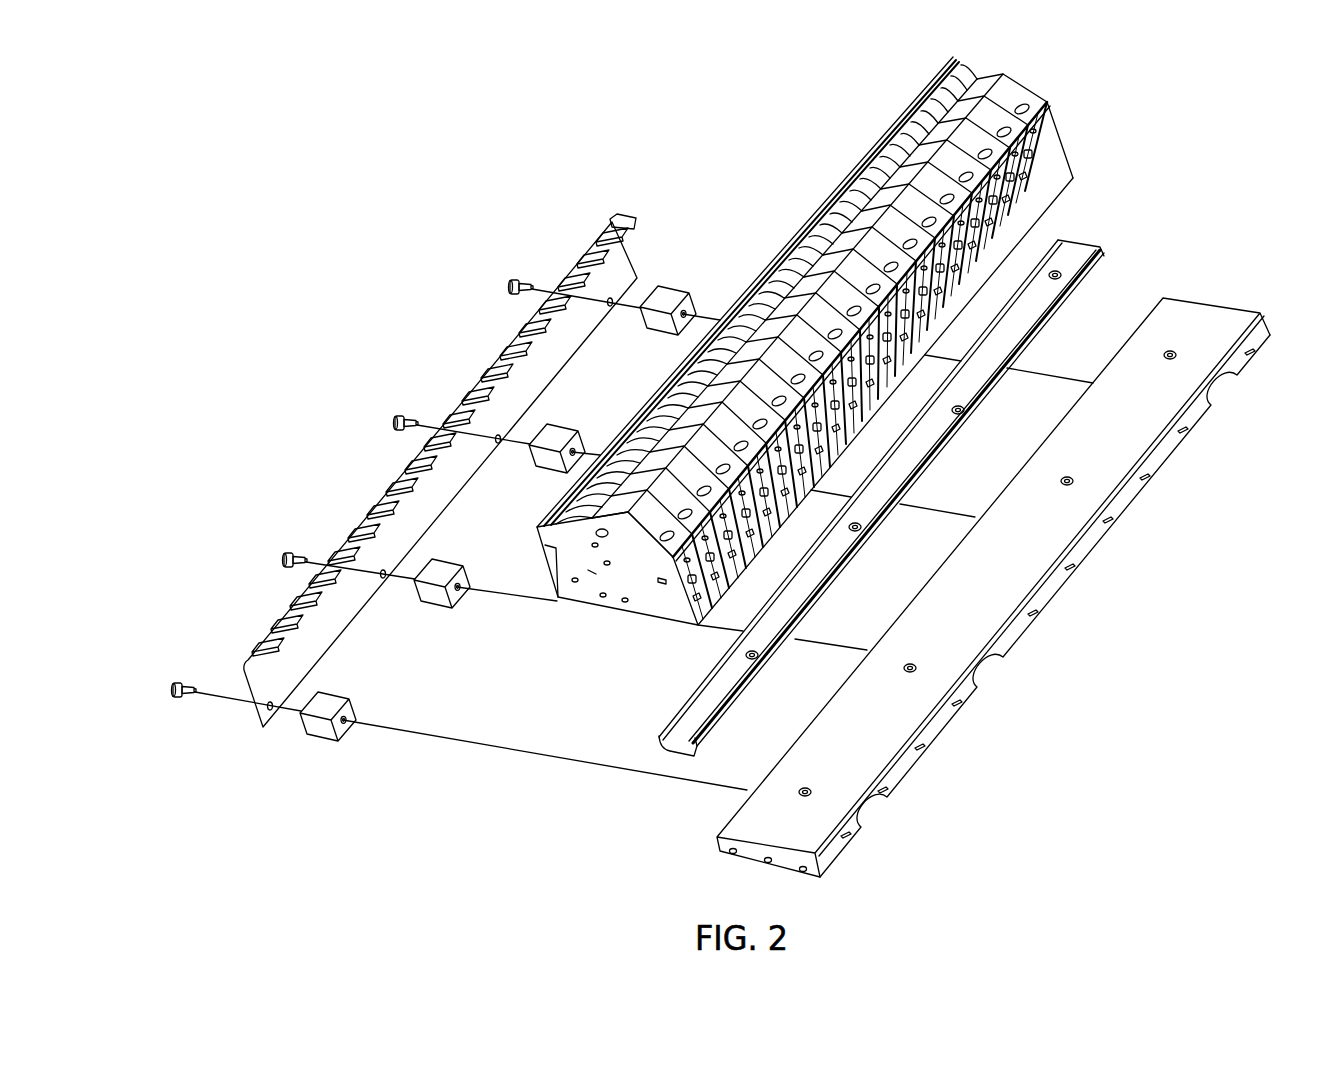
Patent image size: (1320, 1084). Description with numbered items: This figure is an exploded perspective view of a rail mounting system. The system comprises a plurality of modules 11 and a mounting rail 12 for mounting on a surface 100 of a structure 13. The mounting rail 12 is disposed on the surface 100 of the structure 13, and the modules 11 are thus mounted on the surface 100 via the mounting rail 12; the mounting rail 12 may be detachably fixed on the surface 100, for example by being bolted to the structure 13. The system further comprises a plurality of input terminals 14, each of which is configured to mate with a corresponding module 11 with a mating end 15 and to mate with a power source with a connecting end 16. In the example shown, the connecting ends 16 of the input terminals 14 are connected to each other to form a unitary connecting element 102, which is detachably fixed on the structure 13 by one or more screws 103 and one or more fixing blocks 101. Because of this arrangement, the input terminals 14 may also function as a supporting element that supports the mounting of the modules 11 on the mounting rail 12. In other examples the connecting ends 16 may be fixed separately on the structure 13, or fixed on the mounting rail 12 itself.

The modules 11 is at (983, 83).
The mounting rail 12 is at (1068, 257).
The structure 13 is at (902, 760).
The input terminals 14 is at (413, 470).
The mating end 15 is at (312, 660).
The connecting end 16 is at (328, 662).
The surface 100 is at (993, 587).
The fixing blocks 101 is at (320, 722).
The unitary connecting element 102 is at (258, 681).
The screws 103 is at (515, 280).